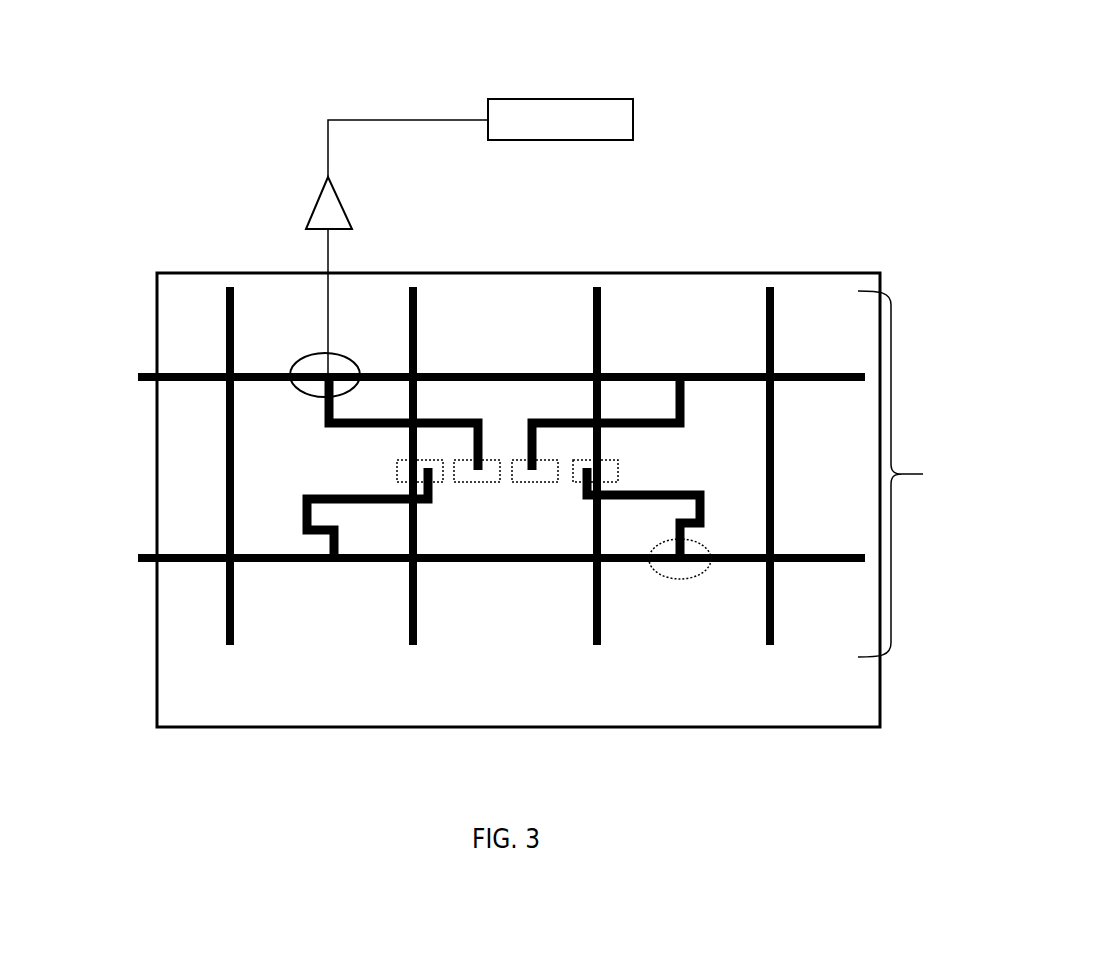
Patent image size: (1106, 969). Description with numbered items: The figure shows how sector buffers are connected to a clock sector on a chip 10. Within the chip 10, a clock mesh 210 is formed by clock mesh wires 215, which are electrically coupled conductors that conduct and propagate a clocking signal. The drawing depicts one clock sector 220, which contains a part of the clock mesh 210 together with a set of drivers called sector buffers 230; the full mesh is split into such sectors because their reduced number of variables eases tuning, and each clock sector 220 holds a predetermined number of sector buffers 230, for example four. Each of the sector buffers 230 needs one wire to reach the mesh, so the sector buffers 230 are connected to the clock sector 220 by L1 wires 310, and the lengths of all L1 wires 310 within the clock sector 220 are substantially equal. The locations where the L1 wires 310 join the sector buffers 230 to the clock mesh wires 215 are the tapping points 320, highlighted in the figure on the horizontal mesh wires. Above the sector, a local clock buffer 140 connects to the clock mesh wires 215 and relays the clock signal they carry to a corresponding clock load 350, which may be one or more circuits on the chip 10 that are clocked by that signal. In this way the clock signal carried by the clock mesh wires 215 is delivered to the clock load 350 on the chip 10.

The chip 10 is at (208, 273).
The clock load 350 is at (542, 99).
The local clock buffer 140 is at (315, 200).
The clock mesh 210 is at (182, 372).
The clock mesh wires 215 is at (227, 466).
The clock sector 220 is at (970, 474).
The sector buffers 230 is at (488, 482).
The L1 wires 310 is at (322, 428).
The tapping points 320 is at (310, 355).